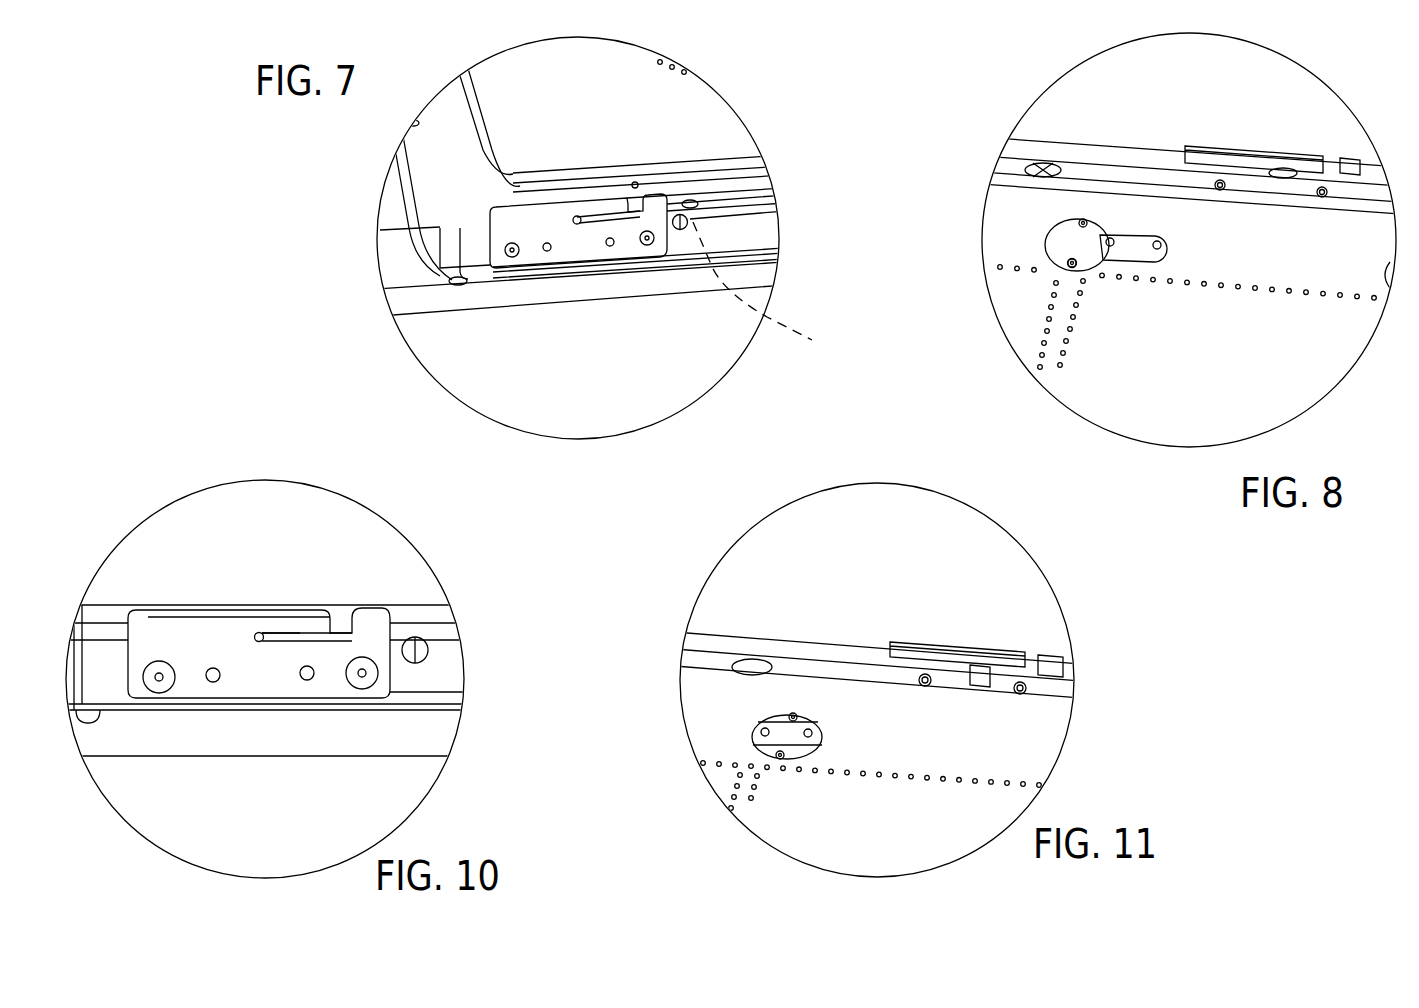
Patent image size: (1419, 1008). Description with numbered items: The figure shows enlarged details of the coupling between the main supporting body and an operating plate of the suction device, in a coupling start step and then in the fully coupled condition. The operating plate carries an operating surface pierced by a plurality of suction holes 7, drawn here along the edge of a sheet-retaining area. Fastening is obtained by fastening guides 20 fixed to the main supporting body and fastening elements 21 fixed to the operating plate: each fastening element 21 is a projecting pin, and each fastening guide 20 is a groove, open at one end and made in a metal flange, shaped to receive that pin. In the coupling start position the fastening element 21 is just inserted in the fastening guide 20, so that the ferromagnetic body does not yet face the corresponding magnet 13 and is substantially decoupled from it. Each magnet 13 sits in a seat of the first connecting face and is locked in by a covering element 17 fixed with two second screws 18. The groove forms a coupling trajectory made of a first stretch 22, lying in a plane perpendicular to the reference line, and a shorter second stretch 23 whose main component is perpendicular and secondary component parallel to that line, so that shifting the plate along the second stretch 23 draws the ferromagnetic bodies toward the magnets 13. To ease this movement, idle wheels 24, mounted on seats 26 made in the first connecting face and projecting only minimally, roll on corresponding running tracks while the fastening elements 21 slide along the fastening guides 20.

In FIG. 7, the suction holes 7 is at (694, 70).
In FIG. 8, the suction holes 7 is at (1245, 300).
In FIG. 11, the suction holes 7 is at (1015, 774).
In FIG. 8, the magnet 13 is at (1130, 247).
In FIG. 11, the magnet 13 is at (793, 740).
In FIG. 8, the covering element 17 is at (1069, 244).
In FIG. 11, the covering element 17 is at (760, 750).
In FIG. 8, the second screws 18 is at (1062, 264).
In FIG. 11, the second screws 18 is at (793, 712).
In FIG. 7, the fastening guide 20 is at (603, 190).
In FIG. 8, the fastening guide 20 is at (1294, 162).
In FIG. 10, the fastening guide 20 is at (315, 600).
In FIG. 11, the fastening guide 20 is at (1000, 638).
In FIG. 7, the fastening element 21 is at (639, 186).
In FIG. 8, the fastening element 21 is at (1326, 189).
In FIG. 10, the fastening element 21 is at (258, 632).
In FIG. 11, the fastening element 21 is at (975, 686).
In FIG. 7, the first stretch 22 is at (606, 217).
In FIG. 10, the first stretch 22 is at (329, 652).
In FIG. 10, the second stretch 23 is at (273, 652).
In FIG. 7, the idle wheels 24 is at (684, 214).
In FIG. 8, the idle wheels 24 is at (1040, 172).
In FIG. 7, the seats 26 is at (765, 288).